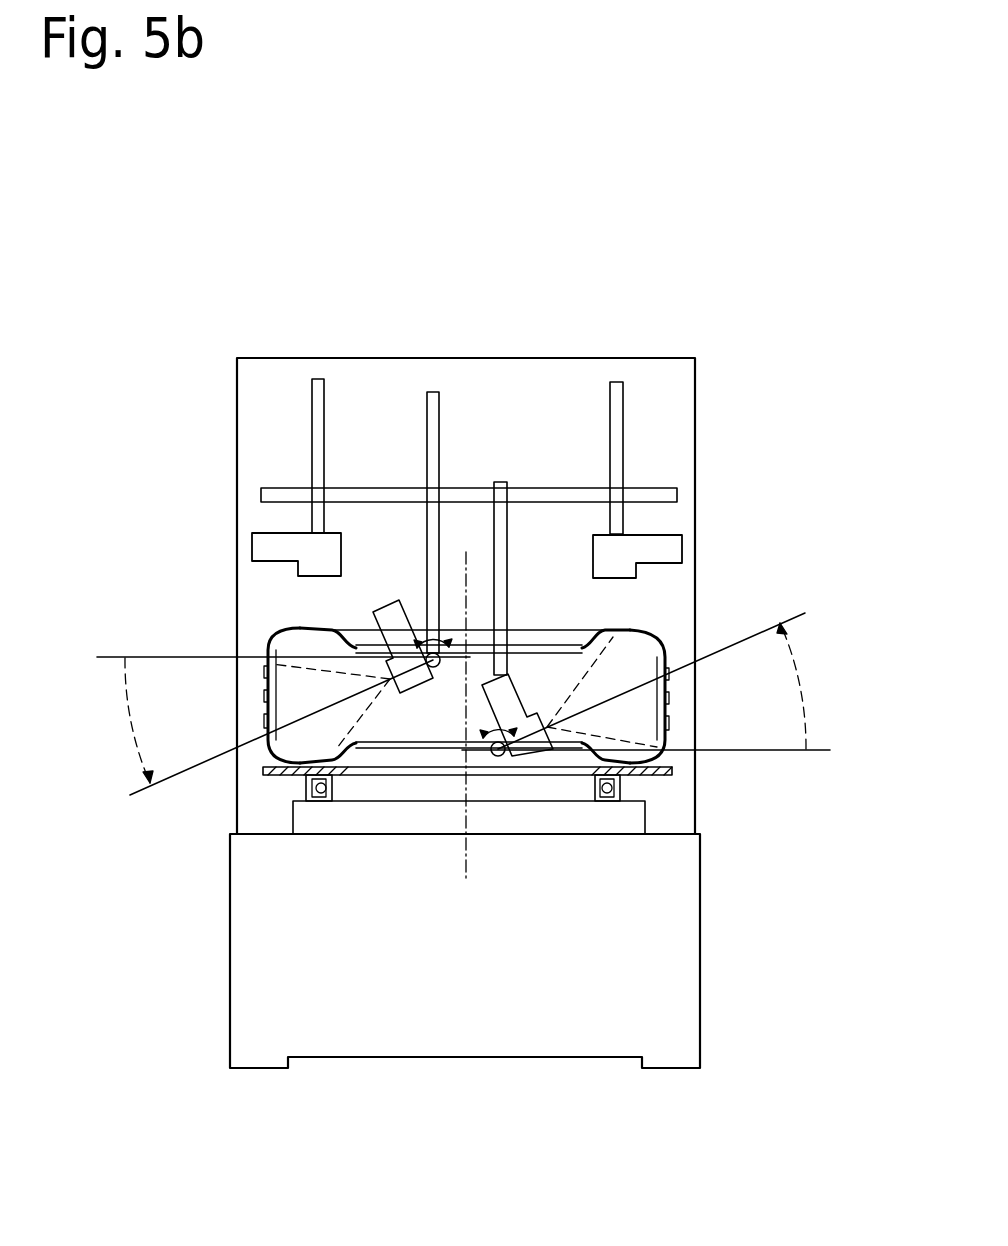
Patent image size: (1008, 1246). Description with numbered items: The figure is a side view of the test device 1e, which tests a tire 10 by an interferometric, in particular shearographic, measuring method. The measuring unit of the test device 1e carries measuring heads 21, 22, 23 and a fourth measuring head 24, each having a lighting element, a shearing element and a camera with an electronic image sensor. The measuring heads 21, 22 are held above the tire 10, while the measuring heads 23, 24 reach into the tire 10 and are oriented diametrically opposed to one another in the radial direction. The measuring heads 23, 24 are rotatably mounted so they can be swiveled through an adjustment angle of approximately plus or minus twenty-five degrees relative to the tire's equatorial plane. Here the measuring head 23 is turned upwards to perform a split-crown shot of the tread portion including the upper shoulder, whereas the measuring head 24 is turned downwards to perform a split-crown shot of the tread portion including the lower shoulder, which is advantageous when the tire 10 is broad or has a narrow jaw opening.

The test device 1e is at (472, 205).
The tire 10 is at (282, 744).
The measuring head 21 is at (272, 545).
The measuring head 22 is at (667, 547).
The measuring head 23 is at (523, 758).
The measuring head 24 is at (405, 683).